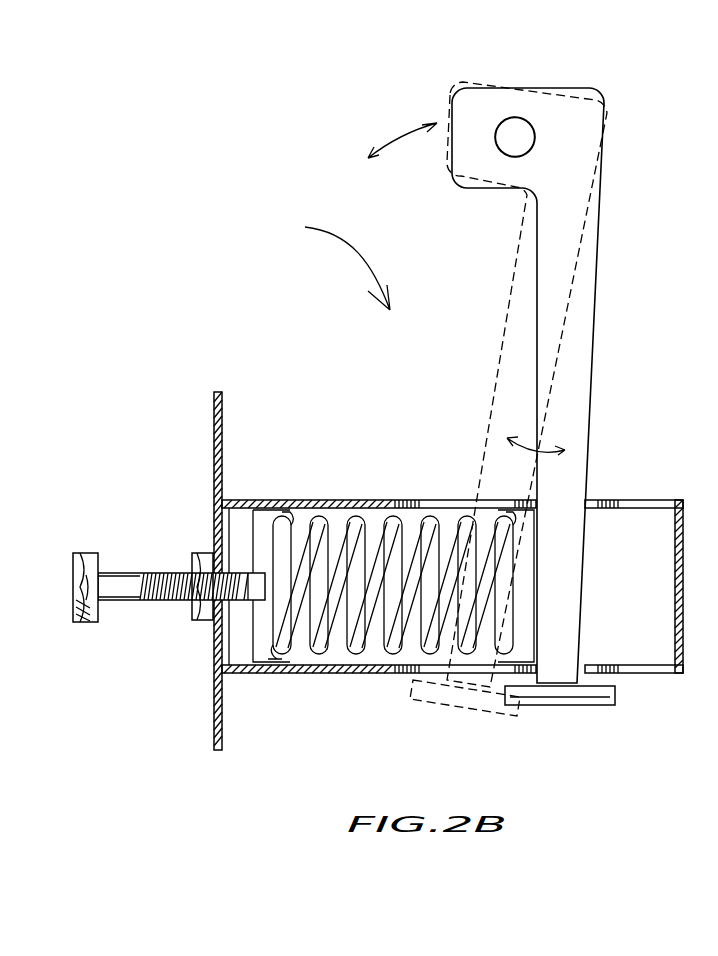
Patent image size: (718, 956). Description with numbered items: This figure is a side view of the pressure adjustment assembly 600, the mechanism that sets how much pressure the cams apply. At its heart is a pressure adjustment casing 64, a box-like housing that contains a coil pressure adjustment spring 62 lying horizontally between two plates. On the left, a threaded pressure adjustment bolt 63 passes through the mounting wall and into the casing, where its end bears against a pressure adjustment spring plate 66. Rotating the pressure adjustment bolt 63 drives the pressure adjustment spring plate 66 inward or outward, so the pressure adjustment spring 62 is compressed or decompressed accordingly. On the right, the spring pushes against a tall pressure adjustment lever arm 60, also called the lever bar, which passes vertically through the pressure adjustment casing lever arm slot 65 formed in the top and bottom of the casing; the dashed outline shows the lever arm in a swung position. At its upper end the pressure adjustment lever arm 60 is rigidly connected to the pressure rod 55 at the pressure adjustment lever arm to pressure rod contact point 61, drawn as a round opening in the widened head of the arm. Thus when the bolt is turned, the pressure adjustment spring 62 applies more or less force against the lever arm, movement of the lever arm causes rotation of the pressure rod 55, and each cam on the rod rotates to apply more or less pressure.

The pressure rod 55 is at (553, 145).
The pressure adjustment lever arm 60 is at (596, 315).
The pressure adjustment lever arm to pressure rod contact point 61 is at (518, 132).
The pressure adjustment spring 62 is at (355, 520).
The pressure adjustment bolt 63 is at (120, 570).
The pressure adjustment casing 64 is at (305, 675).
The pressure adjustment casing lever arm slot 65 is at (452, 500).
The pressure adjustment spring plate 66 is at (245, 520).
The pressure adjustment assembly 600 is at (321, 266).